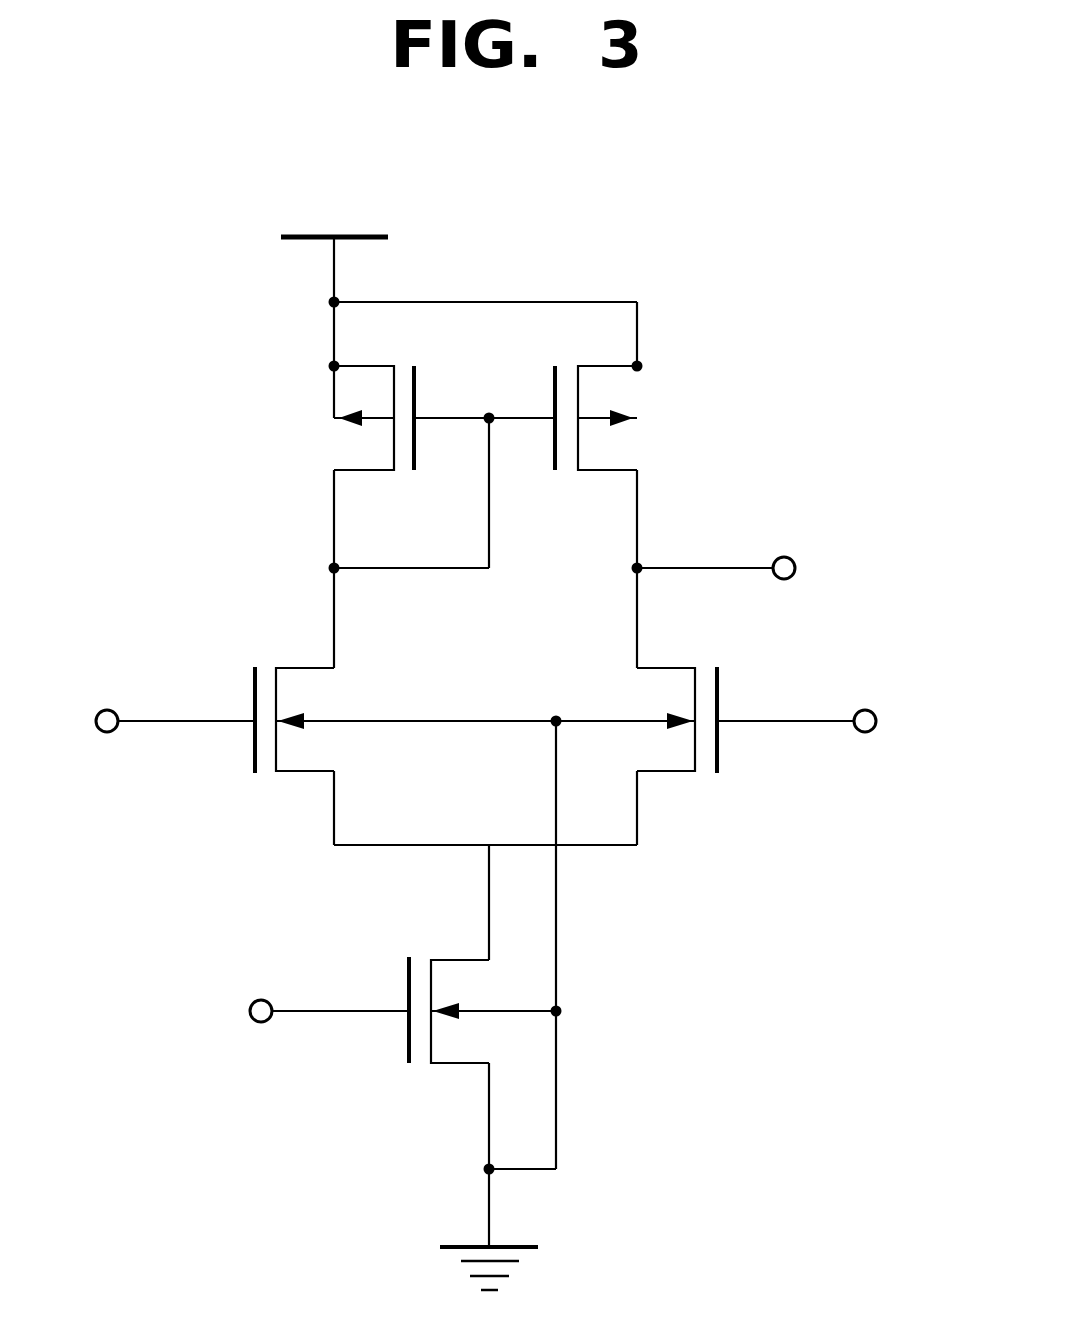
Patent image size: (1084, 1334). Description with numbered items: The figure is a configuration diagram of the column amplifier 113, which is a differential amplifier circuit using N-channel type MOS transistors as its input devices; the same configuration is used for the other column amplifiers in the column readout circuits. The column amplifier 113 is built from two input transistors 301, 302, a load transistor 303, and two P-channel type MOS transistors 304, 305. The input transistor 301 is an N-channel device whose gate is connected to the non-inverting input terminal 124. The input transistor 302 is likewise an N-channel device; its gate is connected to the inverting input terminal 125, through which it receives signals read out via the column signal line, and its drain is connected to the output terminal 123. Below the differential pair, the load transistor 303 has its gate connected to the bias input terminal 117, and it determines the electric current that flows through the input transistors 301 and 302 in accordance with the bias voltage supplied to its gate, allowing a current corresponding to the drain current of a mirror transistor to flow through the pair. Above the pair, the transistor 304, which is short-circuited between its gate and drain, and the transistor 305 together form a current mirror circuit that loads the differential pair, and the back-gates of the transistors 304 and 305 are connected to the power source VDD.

The column amplifier 113 is at (858, 286).
The bias input terminal 117 is at (259, 999).
The output terminal 123 is at (782, 556).
The non-inverting input terminal 124 is at (104, 709).
The inverting input terminal 125 is at (862, 709).
The input transistor 301 is at (252, 680).
The input transistor 302 is at (718, 763).
The load transistor 303 is at (407, 972).
The transistor 304 is at (353, 433).
The transistor 305 is at (613, 436).